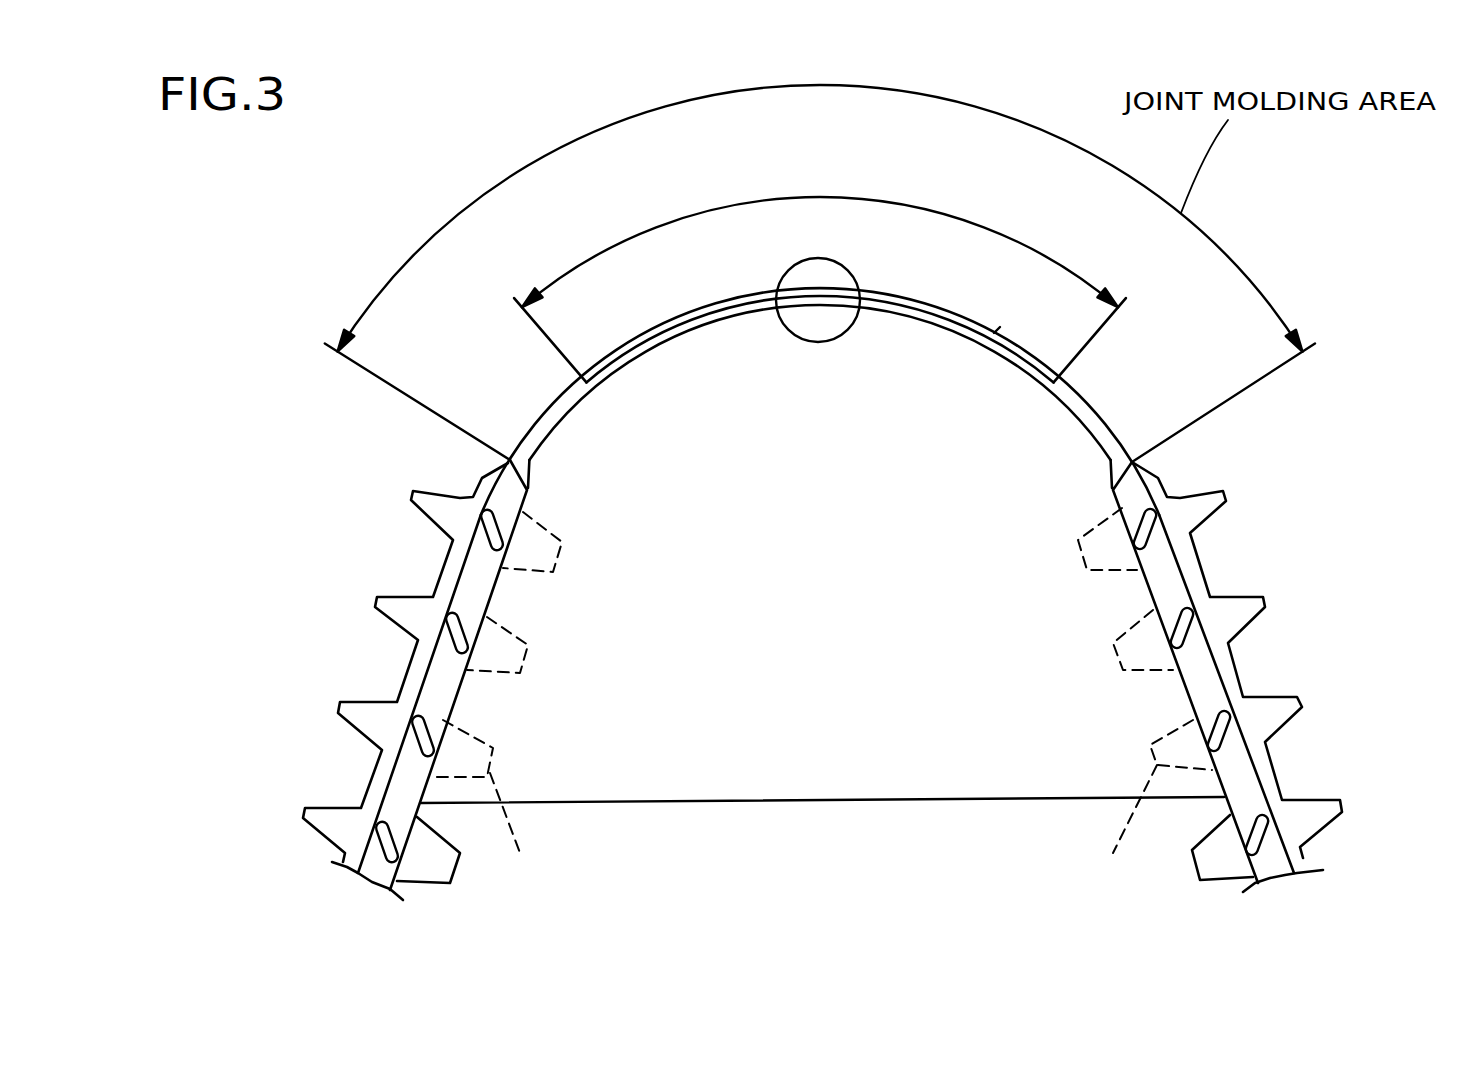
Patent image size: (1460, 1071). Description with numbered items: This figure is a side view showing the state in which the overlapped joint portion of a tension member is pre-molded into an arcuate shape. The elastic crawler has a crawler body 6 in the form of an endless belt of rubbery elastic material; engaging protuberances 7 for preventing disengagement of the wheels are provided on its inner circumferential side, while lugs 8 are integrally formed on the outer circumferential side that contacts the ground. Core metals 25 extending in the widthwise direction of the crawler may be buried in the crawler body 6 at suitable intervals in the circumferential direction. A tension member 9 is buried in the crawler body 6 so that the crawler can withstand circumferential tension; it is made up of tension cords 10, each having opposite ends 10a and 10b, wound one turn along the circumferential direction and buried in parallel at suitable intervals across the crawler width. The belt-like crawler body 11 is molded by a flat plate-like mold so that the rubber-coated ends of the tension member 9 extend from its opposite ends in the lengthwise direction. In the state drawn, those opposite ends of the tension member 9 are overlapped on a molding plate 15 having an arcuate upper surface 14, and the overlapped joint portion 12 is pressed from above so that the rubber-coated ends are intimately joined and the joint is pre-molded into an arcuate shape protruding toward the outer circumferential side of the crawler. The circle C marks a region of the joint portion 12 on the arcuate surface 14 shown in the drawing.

The crawler body 6 is at (370, 783).
The engaging protuberances 7 is at (445, 862).
The lugs 8 is at (387, 595).
The tension member 9 is at (1155, 480).
The tension cords 10 is at (1086, 412).
The end of tension cord 10a is at (694, 322).
The end of tension cord 10b is at (684, 312).
The belt-like crawler body 11 is at (397, 669).
The overlapped joint portion 12 is at (935, 208).
The arcuate upper surface 14 is at (996, 331).
The molding plate 15 is at (779, 780).
The core metals 25 is at (491, 540).
The center C is at (849, 272).